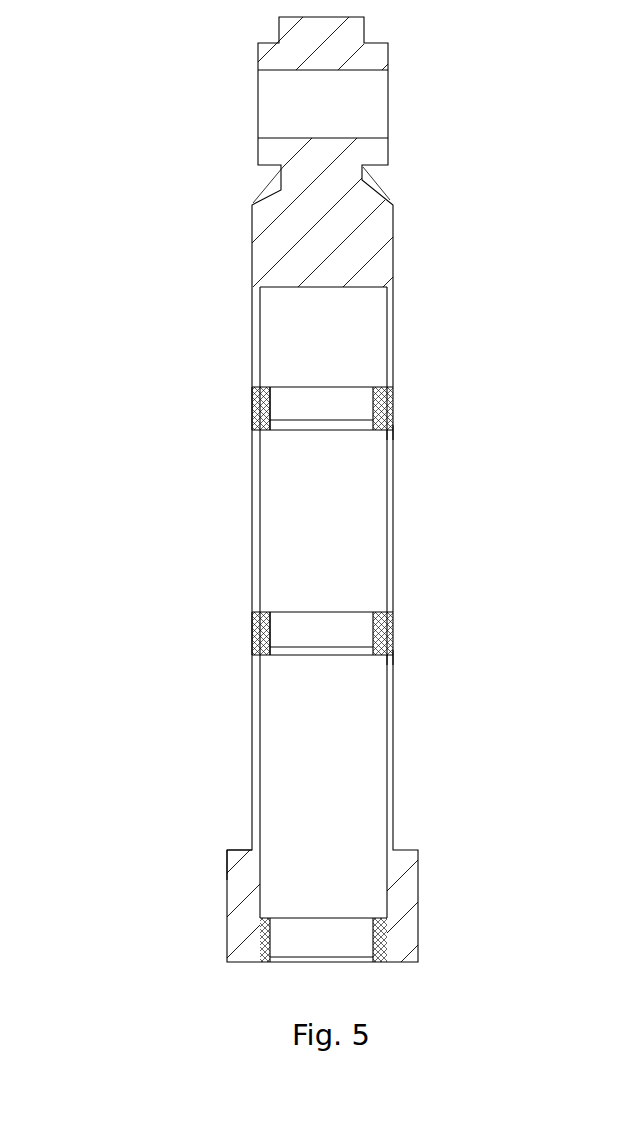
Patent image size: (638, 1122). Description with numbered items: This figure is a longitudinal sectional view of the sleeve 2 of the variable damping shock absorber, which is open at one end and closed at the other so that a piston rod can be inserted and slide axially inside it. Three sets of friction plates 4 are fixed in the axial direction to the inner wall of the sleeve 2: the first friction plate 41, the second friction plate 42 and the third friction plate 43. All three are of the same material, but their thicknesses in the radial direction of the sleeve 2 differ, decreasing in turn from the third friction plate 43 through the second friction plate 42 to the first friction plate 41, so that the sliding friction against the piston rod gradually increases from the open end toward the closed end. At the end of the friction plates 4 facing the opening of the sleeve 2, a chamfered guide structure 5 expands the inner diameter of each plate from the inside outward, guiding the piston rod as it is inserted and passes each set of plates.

The sleeve 2 is at (395, 305).
The friction plates 4 is at (240, 865).
The chamfered guide structure 5 is at (387, 655).
The first friction plate 41 is at (387, 935).
The second friction plate 42 is at (387, 637).
The third friction plate 43 is at (393, 408).